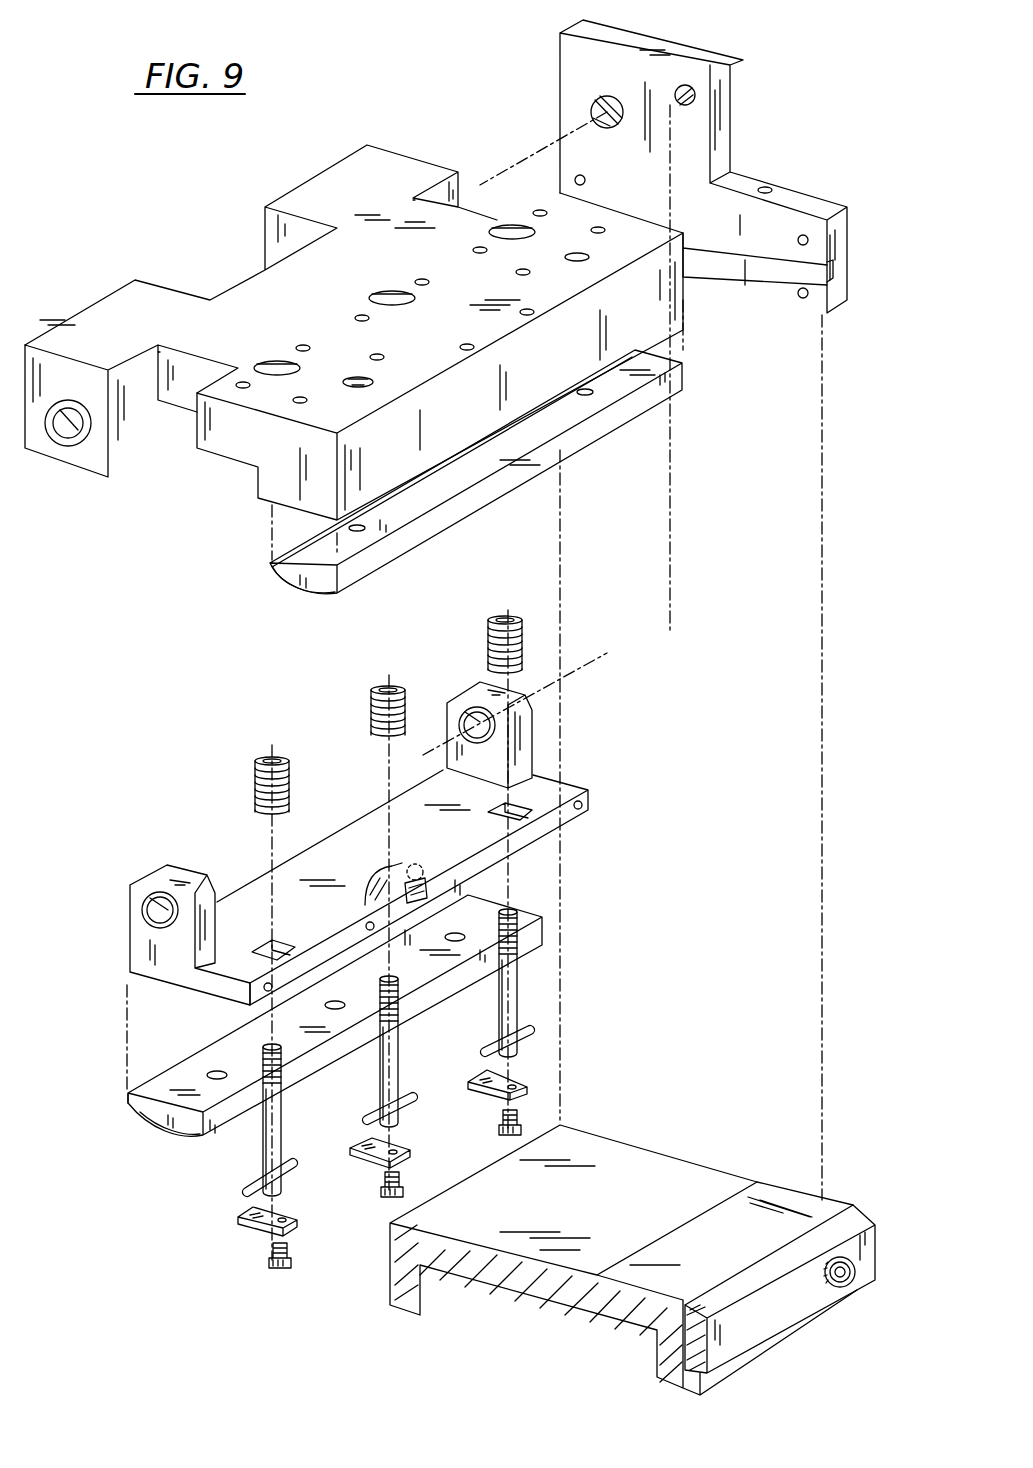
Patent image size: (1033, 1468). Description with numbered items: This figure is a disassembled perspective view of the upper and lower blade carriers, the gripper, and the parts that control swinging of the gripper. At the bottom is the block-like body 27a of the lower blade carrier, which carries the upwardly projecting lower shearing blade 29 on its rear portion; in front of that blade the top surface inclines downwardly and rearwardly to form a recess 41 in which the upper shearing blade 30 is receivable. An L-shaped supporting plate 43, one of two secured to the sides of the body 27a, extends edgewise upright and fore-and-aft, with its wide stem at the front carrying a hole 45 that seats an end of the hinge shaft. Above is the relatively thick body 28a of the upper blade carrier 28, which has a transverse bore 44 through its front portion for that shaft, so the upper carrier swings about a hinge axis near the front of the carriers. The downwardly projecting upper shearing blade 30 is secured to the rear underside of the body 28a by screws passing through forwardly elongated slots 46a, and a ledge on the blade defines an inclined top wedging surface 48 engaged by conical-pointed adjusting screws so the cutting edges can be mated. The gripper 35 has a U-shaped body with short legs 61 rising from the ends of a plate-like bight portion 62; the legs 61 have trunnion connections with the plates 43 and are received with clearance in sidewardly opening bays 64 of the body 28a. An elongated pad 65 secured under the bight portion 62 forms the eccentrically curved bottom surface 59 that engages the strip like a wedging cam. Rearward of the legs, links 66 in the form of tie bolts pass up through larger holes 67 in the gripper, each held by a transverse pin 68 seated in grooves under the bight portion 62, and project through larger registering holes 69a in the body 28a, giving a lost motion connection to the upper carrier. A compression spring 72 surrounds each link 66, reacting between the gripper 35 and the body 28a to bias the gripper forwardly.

The body of the upper blade carrier 28a is at (382, 150).
The hole 45 is at (598, 108).
The L-shaped supporting plate 43 is at (733, 118).
The registering hole 69a is at (510, 230).
The sidewardly opening bay 64 is at (195, 360).
The upper blade carrier 28 is at (650, 305).
The upper shearing blade 30 is at (585, 437).
The transverse bore 44 is at (68, 445).
The top wedging surface 48 is at (278, 562).
The forwardly elongated slot 46a is at (365, 380).
The compression spring 72 is at (490, 630).
The gripper leg 61 is at (482, 682).
The hole in the gripper 67 is at (523, 808).
The bight portion 62 is at (352, 834).
The elongated pad 65 is at (182, 1090).
The bottom surface of the gripper 59 is at (145, 1122).
The gripper 35 is at (180, 1125).
The link 66 is at (397, 1036).
The transverse pin 68 is at (405, 1093).
The body of the lower blade carrier 27a is at (580, 1162).
The recess 41 is at (775, 1198).
The lower shearing blade 29 is at (860, 1220).